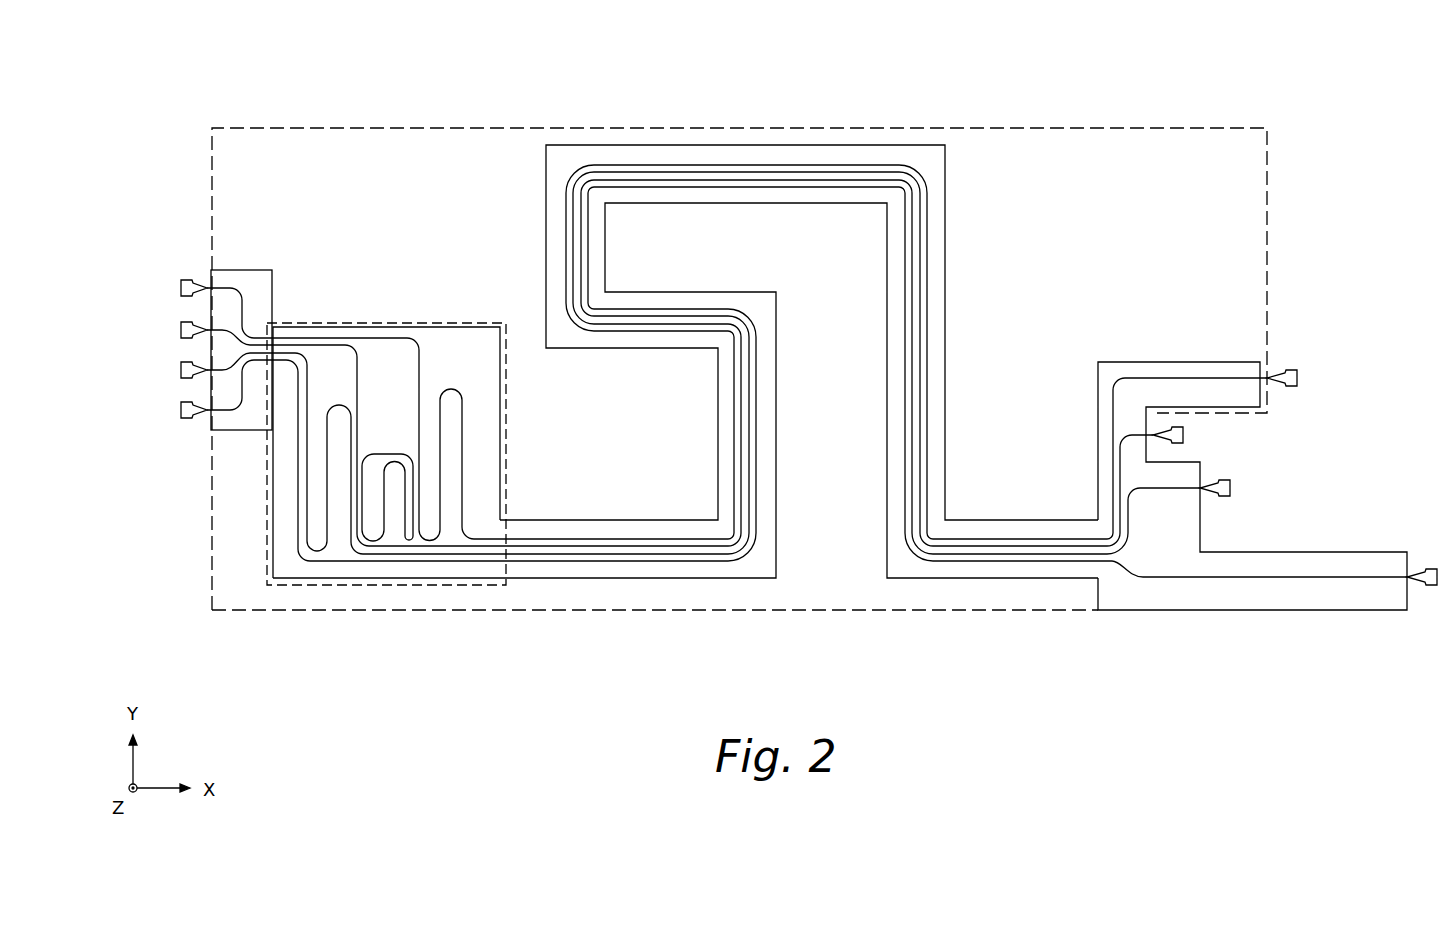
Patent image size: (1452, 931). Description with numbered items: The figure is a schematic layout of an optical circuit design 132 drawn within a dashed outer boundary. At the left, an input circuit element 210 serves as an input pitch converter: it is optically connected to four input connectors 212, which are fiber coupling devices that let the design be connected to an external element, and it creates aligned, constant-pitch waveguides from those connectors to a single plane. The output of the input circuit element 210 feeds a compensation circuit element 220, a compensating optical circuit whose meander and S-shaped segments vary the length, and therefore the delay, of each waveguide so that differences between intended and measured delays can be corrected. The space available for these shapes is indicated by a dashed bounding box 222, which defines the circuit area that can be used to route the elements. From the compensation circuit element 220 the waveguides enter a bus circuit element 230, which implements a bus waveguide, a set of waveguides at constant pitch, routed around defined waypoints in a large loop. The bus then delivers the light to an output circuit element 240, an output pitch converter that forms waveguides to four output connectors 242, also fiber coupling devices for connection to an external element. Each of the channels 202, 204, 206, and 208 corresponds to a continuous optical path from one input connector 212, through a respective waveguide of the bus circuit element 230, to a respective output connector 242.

The optical circuit design 132 is at (422, 128).
The channel 202 is at (241, 415).
The channel 204 is at (222, 368).
The channel 206 is at (222, 332).
The channel 208 is at (223, 288).
The input circuit element 210 is at (272, 290).
The input connectors 212 is at (166, 350).
The compensation circuit element 220 is at (480, 368).
The bounding box 222 is at (508, 423).
The bus circuit element 230 is at (605, 568).
The output circuit element 240 is at (1113, 593).
The output connectors 242 is at (1294, 457).